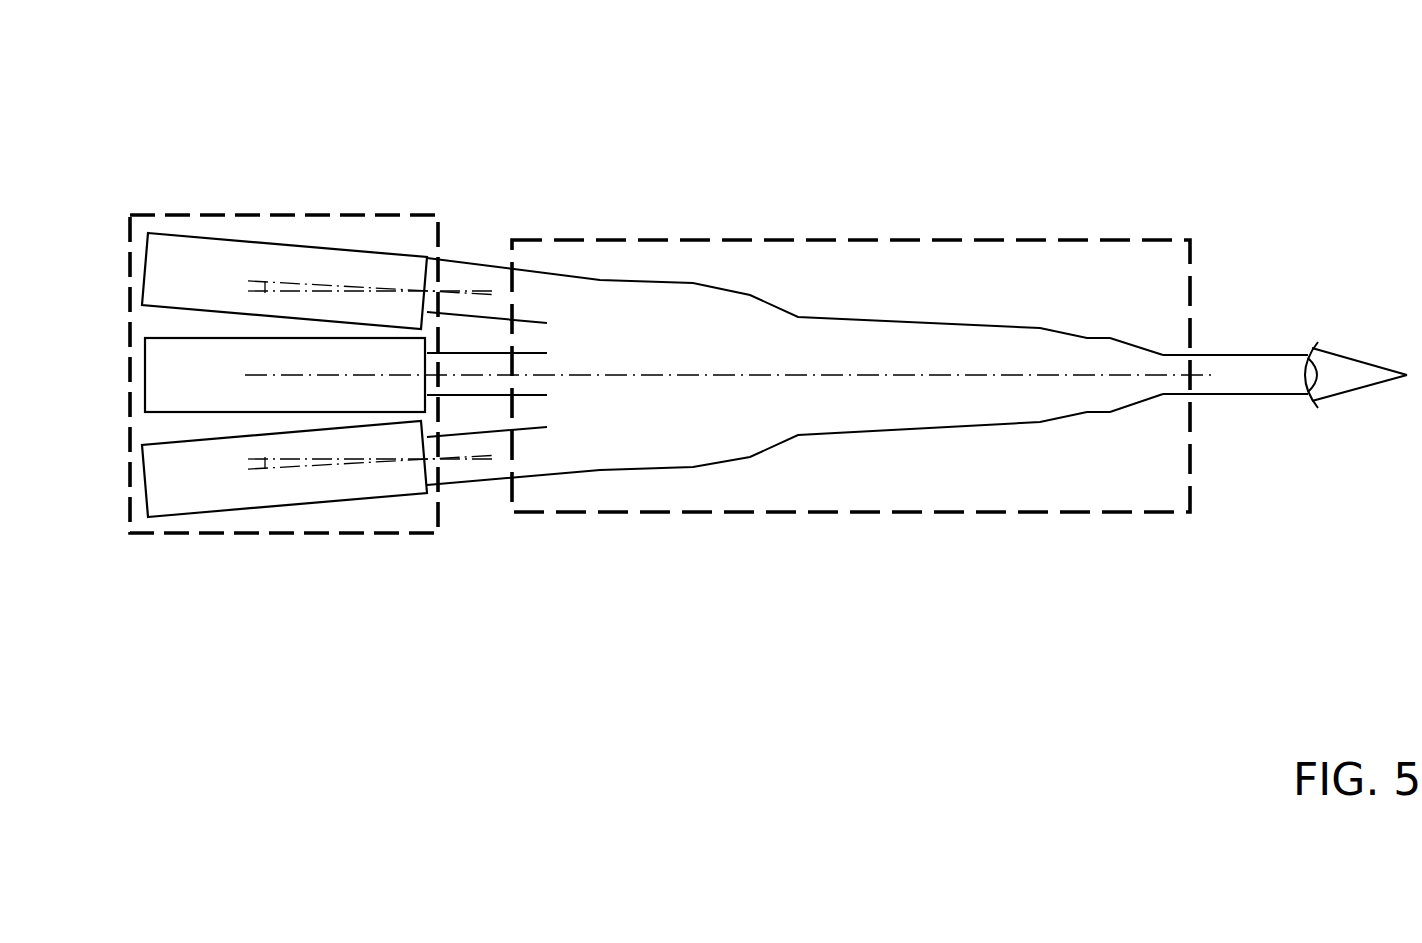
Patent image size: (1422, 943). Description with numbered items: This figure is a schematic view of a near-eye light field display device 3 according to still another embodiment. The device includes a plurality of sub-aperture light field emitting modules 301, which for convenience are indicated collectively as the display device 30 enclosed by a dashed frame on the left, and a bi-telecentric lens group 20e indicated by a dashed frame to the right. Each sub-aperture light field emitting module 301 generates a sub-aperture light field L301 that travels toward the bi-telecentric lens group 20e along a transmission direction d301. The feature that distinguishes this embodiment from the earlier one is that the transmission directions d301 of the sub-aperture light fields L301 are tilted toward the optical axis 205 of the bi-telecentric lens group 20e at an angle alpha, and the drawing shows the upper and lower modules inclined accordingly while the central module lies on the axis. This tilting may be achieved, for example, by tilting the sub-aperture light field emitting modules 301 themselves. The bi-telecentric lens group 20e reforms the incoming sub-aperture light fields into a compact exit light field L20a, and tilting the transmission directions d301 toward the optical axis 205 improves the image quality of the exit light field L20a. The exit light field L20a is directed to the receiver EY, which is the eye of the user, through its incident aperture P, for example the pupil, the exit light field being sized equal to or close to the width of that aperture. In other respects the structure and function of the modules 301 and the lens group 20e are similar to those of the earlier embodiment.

The near-eye light field display device 3 is at (112, 78).
The display device 30 is at (226, 216).
The sub-aperture light field emitting module 301 is at (143, 270).
The transmission direction d301 is at (472, 291).
The sub-aperture light field L301 is at (528, 352).
The optical axis 205 is at (860, 375).
The bi-telecentric lens group 20e is at (1016, 240).
The exit light field L20a is at (1250, 350).
The receiver EY is at (1352, 372).
The incident aperture P is at (1320, 376).